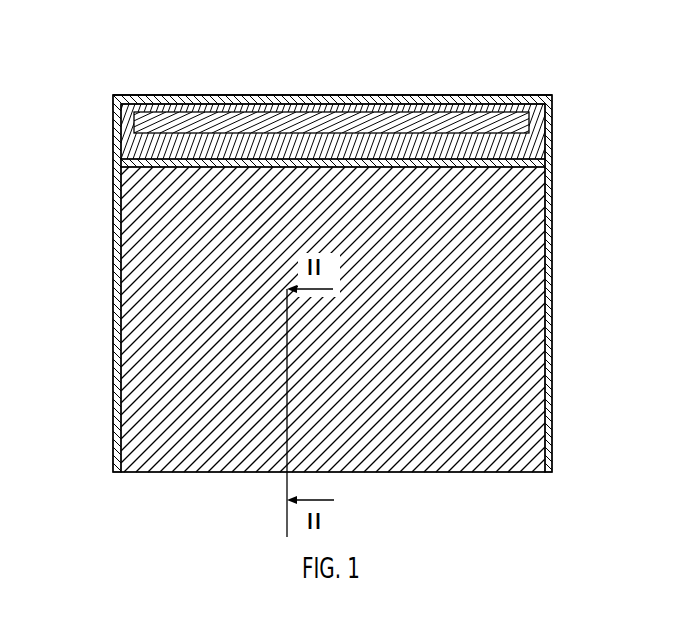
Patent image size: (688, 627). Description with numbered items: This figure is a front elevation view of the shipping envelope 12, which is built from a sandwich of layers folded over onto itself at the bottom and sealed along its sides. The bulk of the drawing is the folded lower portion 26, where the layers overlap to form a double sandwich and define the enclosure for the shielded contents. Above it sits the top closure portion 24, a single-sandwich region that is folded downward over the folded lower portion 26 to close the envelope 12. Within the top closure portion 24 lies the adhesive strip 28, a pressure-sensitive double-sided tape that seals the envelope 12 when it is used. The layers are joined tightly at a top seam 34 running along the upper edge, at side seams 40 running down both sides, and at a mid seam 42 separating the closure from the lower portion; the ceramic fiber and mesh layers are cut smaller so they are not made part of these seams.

The shipping envelope 12 is at (519, 71).
The top closure portion 24 is at (130, 139).
The folded lower portion 26 is at (143, 267).
The adhesive strip 28 is at (412, 128).
The top seam 34 is at (327, 95).
The side seams 40 is at (117, 363).
The mid seam 42 is at (505, 166).